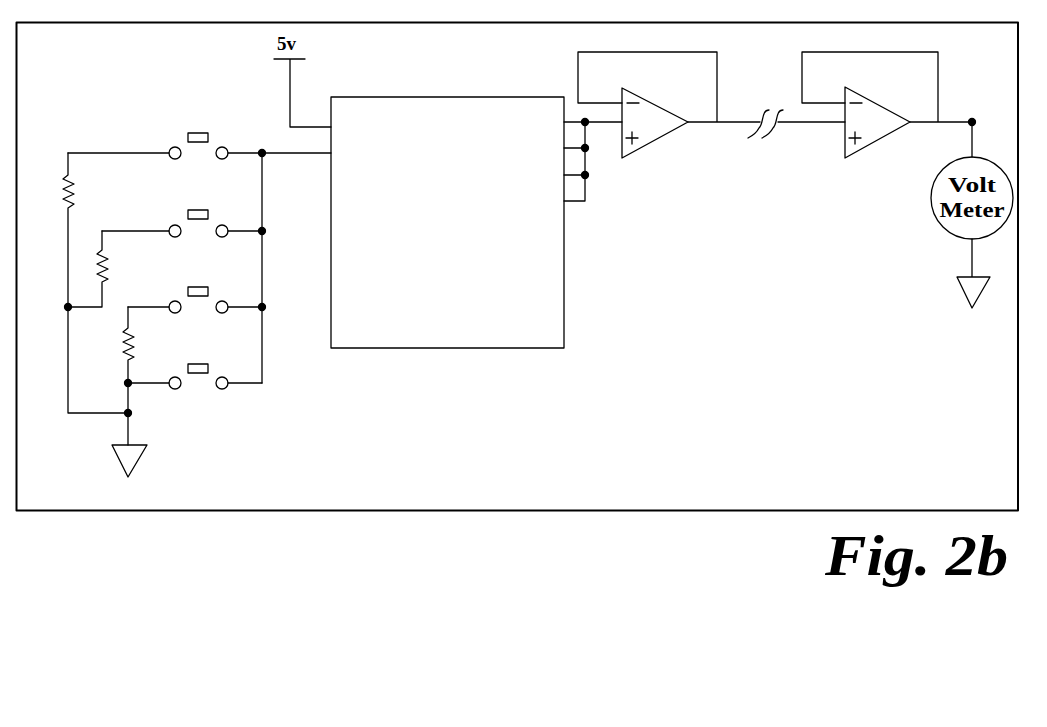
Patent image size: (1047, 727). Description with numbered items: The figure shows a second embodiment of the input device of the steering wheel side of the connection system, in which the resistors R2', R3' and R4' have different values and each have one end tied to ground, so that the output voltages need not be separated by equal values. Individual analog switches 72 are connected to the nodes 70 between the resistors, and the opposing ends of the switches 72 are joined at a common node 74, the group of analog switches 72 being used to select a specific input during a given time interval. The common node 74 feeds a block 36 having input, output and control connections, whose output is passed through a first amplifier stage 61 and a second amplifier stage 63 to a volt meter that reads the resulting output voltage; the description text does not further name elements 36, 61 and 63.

The analog multiplexer / switch block 36 is at (378, 97).
The first buffer operational amplifier 61 is at (657, 140).
The second buffer operational amplifier 63 is at (882, 138).
The node 70 is at (66, 307).
The analog switch 72 is at (167, 140).
The common node 74 is at (264, 156).